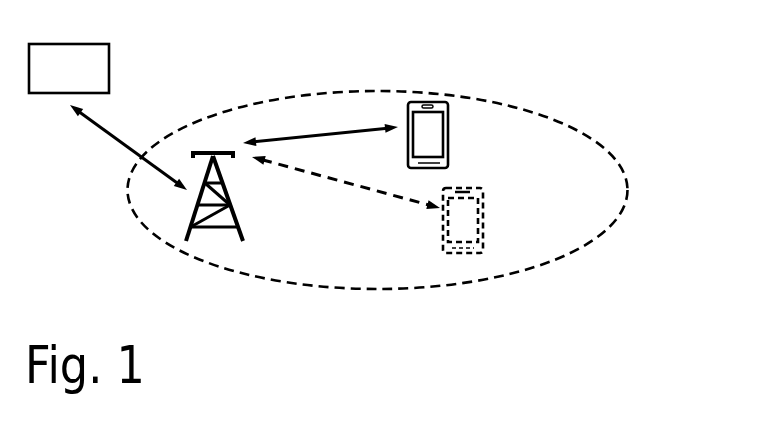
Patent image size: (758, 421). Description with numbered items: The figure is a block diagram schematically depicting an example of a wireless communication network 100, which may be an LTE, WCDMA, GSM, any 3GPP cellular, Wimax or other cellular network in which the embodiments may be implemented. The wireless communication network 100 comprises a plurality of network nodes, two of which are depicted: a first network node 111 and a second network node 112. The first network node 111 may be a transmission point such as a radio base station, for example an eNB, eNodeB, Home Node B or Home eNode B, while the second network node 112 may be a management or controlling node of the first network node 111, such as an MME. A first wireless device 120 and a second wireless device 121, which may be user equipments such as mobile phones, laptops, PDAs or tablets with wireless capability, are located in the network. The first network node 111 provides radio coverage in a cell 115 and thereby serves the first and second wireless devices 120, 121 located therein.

The wireless communication network 100 is at (636, 52).
The first network node 111 is at (242, 232).
The second network node 112 is at (109, 72).
The cell 115 is at (297, 97).
The first wireless device 120 is at (443, 127).
The second wireless device 121 is at (482, 220).